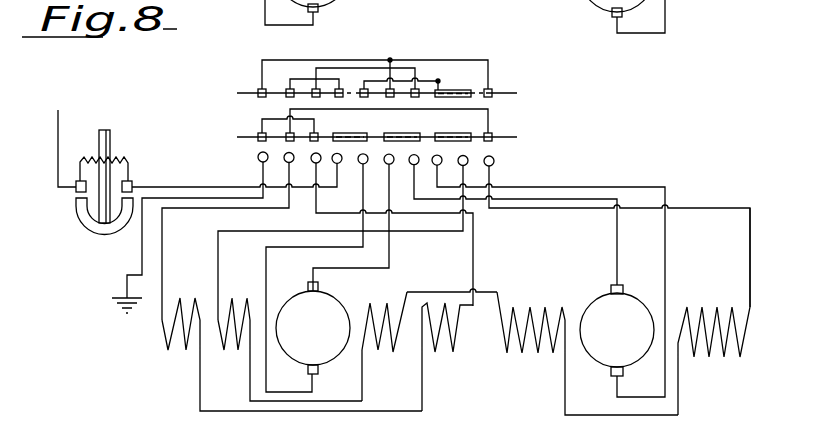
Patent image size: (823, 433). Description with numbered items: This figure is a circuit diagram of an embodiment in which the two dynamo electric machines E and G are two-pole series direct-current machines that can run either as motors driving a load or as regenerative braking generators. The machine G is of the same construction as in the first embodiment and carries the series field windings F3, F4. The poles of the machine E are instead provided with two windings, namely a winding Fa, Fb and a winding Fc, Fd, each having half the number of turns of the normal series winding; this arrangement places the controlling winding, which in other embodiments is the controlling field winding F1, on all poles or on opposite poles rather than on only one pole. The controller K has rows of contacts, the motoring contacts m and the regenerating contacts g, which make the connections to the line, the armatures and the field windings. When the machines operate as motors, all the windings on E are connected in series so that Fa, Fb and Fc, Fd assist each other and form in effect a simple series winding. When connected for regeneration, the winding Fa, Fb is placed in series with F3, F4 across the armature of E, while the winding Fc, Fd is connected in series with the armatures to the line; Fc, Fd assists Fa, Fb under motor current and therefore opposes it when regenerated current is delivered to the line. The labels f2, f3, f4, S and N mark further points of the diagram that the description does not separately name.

The controlling field winding F1 is at (282, 12).
The relay coil contacts f2 is at (401, 10).
The relay coil contacts f3 is at (501, 10).
The relay coil f4 is at (656, 16).
The regenerating contacts g is at (385, 84).
The motoring contacts m is at (387, 131).
The controller K is at (407, 138).
The switch conductor S is at (326, 243).
The neutral junction N is at (452, 281).
The dynamo electric machine E is at (313, 328).
The dynamo electric machine G is at (617, 330).
The field winding Fc is at (292, 354).
The field winding Fa is at (290, 349).
The field winding Fb is at (384, 346).
The field winding Fd is at (447, 357).
The series field winding F3 is at (587, 353).
The series field winding F4 is at (714, 311).